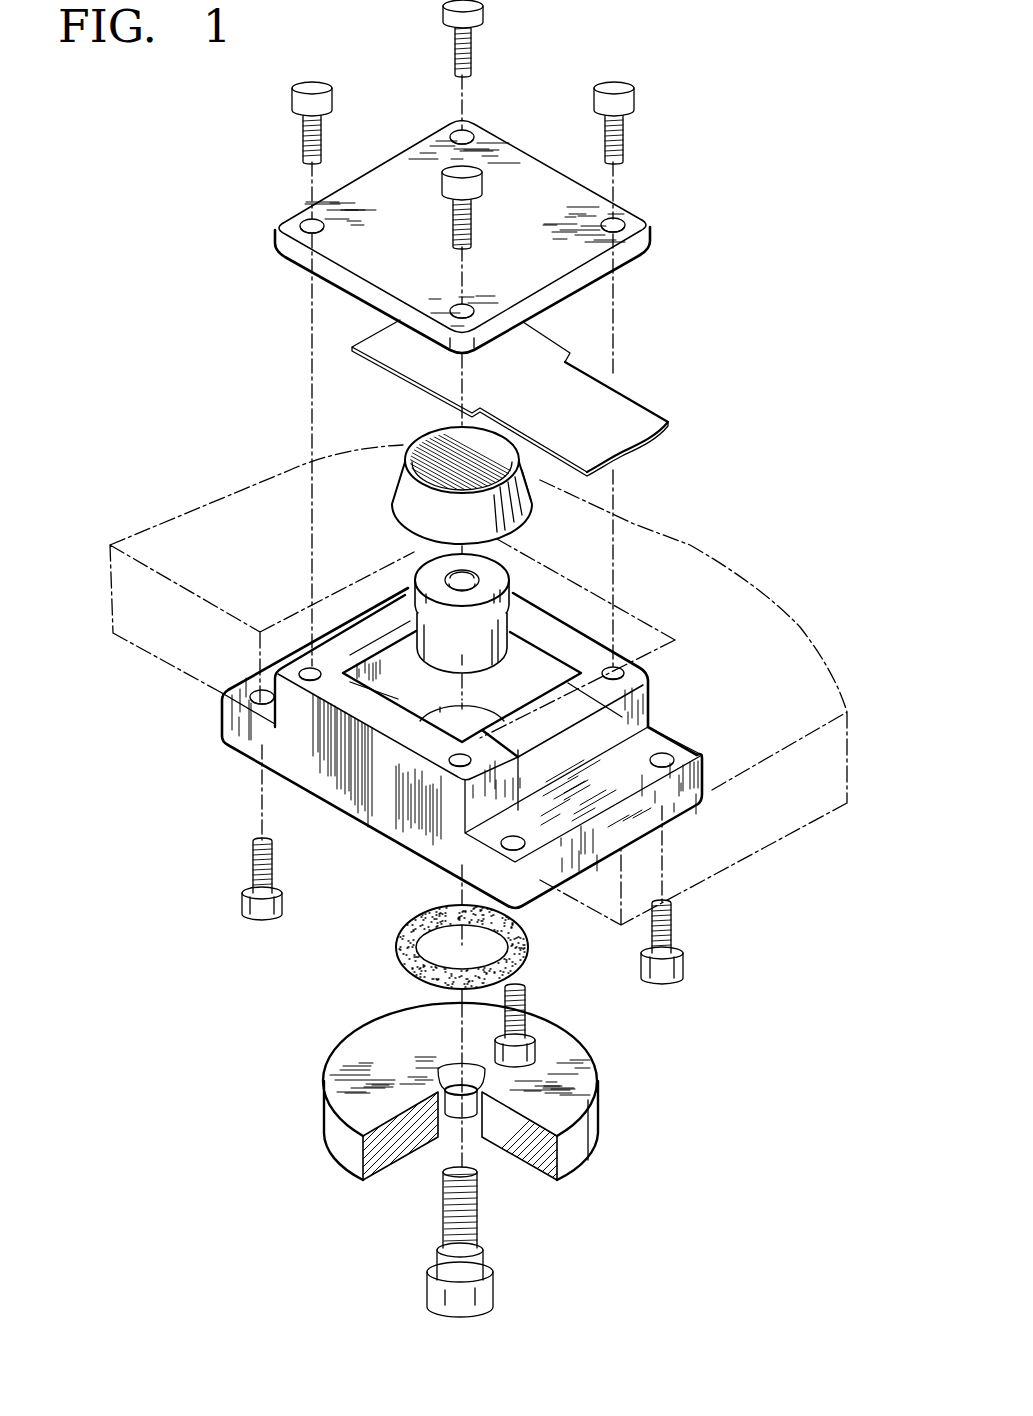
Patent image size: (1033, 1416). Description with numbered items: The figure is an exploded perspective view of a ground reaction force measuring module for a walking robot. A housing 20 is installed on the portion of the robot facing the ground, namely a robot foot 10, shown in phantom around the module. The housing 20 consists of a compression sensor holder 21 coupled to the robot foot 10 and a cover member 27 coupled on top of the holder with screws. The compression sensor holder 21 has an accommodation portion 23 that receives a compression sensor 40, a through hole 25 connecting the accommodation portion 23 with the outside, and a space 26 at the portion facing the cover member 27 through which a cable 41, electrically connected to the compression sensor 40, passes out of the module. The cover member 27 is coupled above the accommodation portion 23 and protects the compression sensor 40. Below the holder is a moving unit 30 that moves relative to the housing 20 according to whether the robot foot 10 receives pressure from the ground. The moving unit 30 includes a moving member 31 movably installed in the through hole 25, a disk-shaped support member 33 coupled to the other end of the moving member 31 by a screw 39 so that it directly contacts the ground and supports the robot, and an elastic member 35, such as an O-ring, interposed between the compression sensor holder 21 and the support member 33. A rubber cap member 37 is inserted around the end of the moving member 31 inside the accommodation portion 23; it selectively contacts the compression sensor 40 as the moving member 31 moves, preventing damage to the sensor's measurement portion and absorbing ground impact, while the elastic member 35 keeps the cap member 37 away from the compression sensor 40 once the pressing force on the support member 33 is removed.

The robot foot 10 is at (780, 845).
The housing 20 is at (426, 709).
The compression sensor holder 21 is at (367, 823).
The accommodation portion 23 is at (408, 667).
The through hole 25 is at (482, 720).
The space 26 is at (640, 724).
The cover member 27 is at (287, 258).
The moving unit 30 is at (441, 1150).
The moving member 31 is at (428, 572).
The support member 33 is at (593, 1143).
The elastic member 35 is at (395, 947).
The cap member 37 is at (420, 446).
The screw 39 is at (483, 1259).
The compression sensor 40 is at (477, 238).
The cable 41 is at (645, 418).